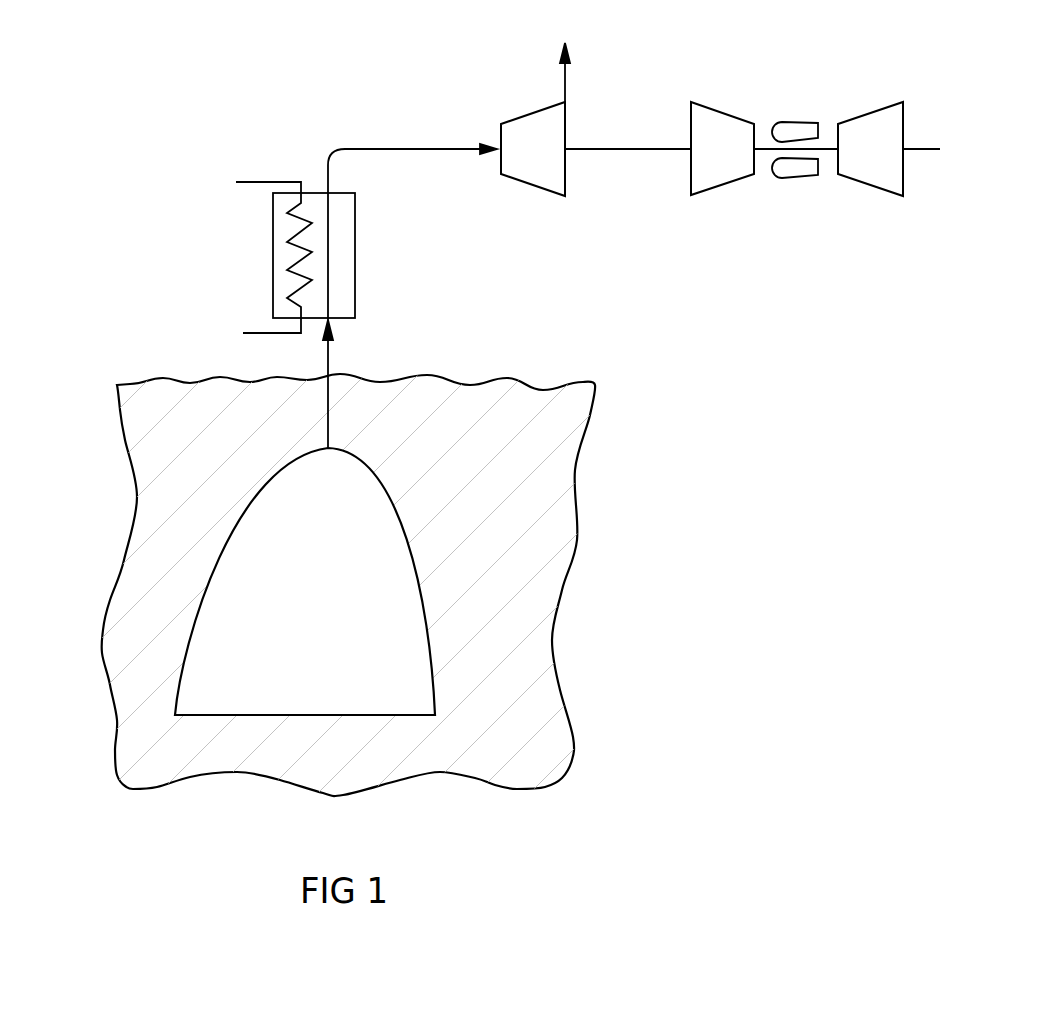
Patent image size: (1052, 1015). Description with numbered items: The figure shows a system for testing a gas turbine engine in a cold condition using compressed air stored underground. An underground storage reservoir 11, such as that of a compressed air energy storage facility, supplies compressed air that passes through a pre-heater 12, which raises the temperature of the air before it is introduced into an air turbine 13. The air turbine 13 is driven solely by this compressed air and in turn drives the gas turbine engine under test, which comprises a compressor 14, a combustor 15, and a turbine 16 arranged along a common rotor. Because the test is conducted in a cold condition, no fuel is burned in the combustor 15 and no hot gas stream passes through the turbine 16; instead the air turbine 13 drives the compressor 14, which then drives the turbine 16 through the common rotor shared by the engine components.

The underground storage reservoir 11 is at (257, 555).
The pre-heater 12 is at (280, 251).
The air turbine 13 is at (540, 136).
The compressor 14 is at (712, 128).
The combustor 15 is at (787, 128).
The turbine 16 is at (877, 124).